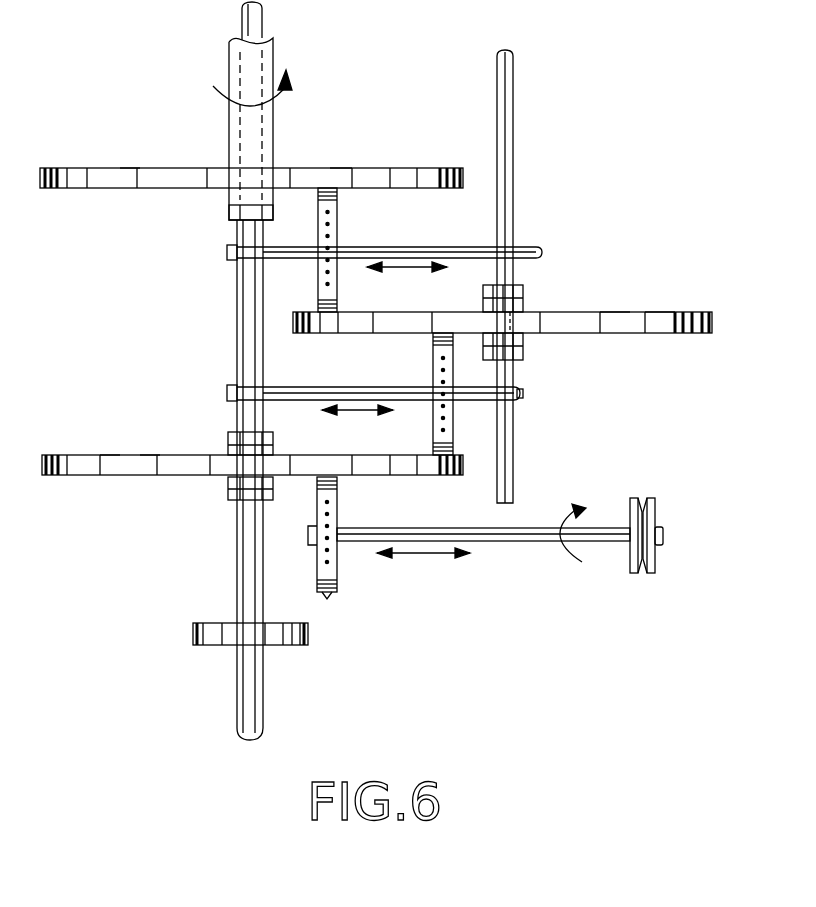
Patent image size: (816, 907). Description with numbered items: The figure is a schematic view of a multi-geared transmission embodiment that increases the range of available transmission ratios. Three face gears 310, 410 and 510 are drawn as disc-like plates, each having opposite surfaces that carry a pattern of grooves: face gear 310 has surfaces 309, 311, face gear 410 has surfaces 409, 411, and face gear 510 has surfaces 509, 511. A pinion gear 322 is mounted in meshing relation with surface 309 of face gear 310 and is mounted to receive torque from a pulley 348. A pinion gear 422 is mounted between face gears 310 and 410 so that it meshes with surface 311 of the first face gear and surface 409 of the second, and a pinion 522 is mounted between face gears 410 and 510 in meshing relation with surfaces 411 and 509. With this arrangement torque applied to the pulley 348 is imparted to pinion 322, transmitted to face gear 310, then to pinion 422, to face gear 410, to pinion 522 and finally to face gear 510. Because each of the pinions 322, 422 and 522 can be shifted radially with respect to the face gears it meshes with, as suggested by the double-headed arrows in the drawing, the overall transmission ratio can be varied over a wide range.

The surface 309 is at (138, 478).
The face gear 310 is at (113, 450).
The surface 311 is at (151, 455).
The pinion gear 322 is at (340, 504).
The pulley 348 is at (625, 578).
The surface 409 is at (597, 335).
The face gear 410 is at (656, 310).
The surface 411 is at (617, 312).
The pinion gear 422 is at (432, 350).
The surface 509 is at (153, 190).
The face gear 510 is at (335, 152).
The surface 511 is at (122, 168).
The pinion 522 is at (340, 232).